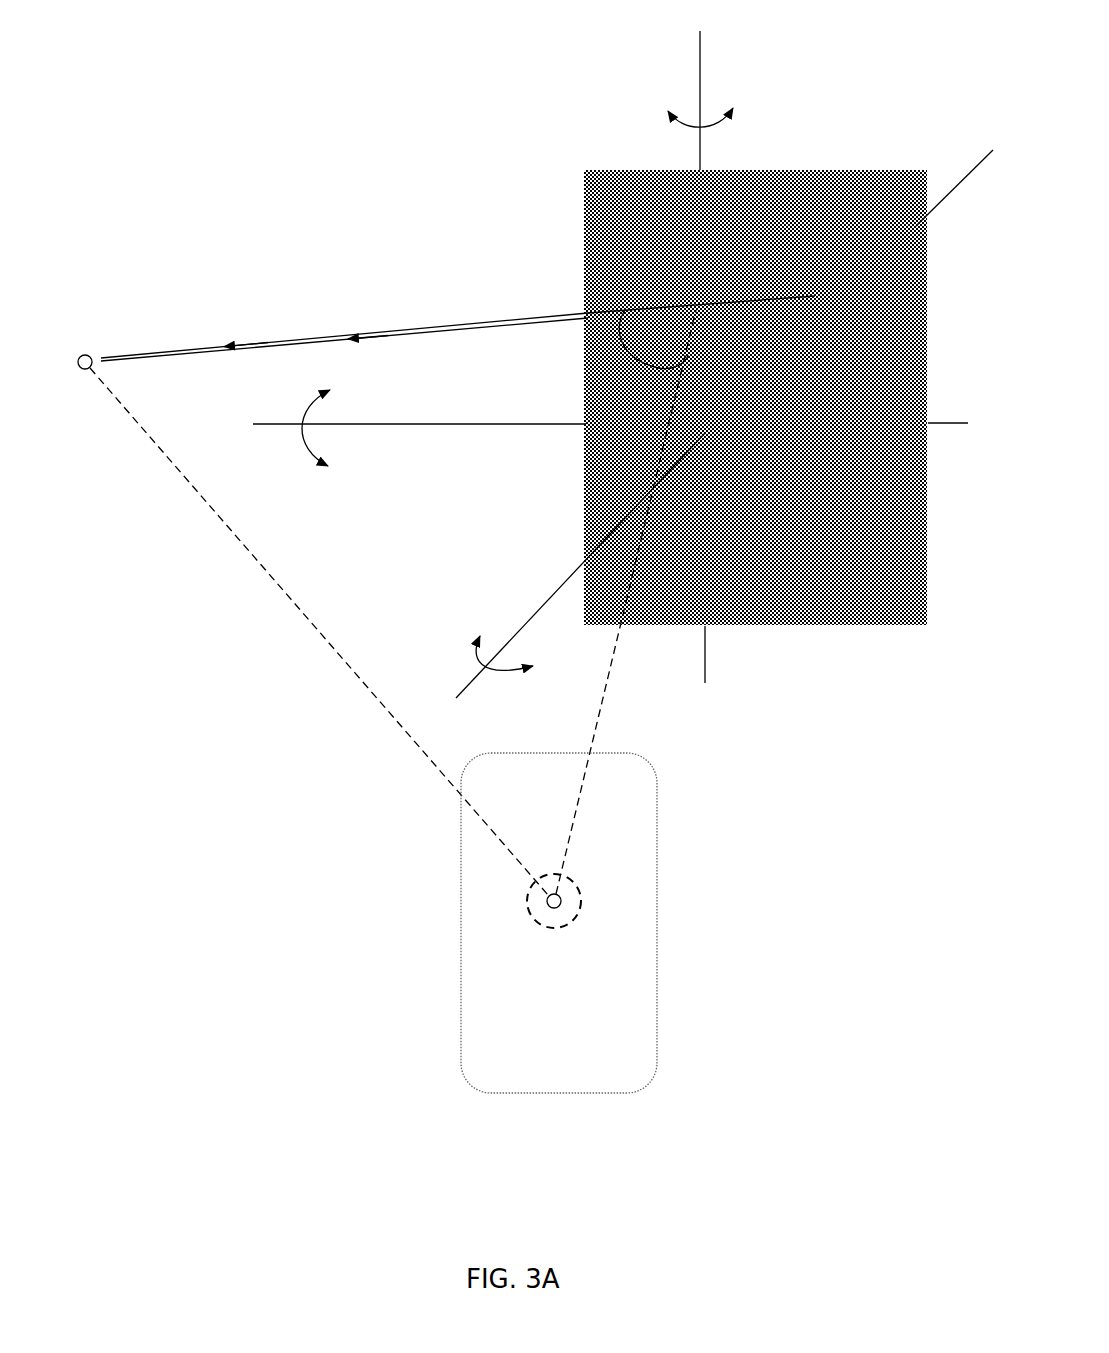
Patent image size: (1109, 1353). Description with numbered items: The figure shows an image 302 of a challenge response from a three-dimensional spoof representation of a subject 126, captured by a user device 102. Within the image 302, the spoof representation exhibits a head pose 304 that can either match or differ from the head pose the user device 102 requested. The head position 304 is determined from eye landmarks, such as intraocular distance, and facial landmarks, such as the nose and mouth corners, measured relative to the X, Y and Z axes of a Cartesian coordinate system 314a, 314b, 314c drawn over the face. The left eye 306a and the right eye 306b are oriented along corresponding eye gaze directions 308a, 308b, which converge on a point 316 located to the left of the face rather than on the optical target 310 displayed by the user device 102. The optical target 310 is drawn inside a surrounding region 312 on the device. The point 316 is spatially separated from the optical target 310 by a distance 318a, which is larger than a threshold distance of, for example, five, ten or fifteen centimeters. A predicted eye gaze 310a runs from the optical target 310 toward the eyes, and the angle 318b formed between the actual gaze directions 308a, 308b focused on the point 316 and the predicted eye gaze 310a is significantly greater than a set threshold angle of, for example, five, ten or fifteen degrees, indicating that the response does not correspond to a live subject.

The image 302 is at (243, 116).
The head pose 304 is at (614, 212).
The left eye 306a is at (623, 285).
The right eye 306b is at (809, 288).
The subject 126 is at (582, 303).
The eye gaze direction 308a is at (218, 339).
The eye gaze direction 308b is at (342, 330).
The point 316 is at (90, 351).
The distance 318a is at (293, 594).
The angle 318b is at (627, 351).
The X axis 314a is at (416, 419).
The Y axis 314b is at (700, 148).
The Z axis 314c is at (539, 590).
The optical target 310 is at (556, 892).
The predicted eye gaze 310a is at (611, 655).
The camera field region 312 is at (574, 910).
The user device 102 is at (454, 857).